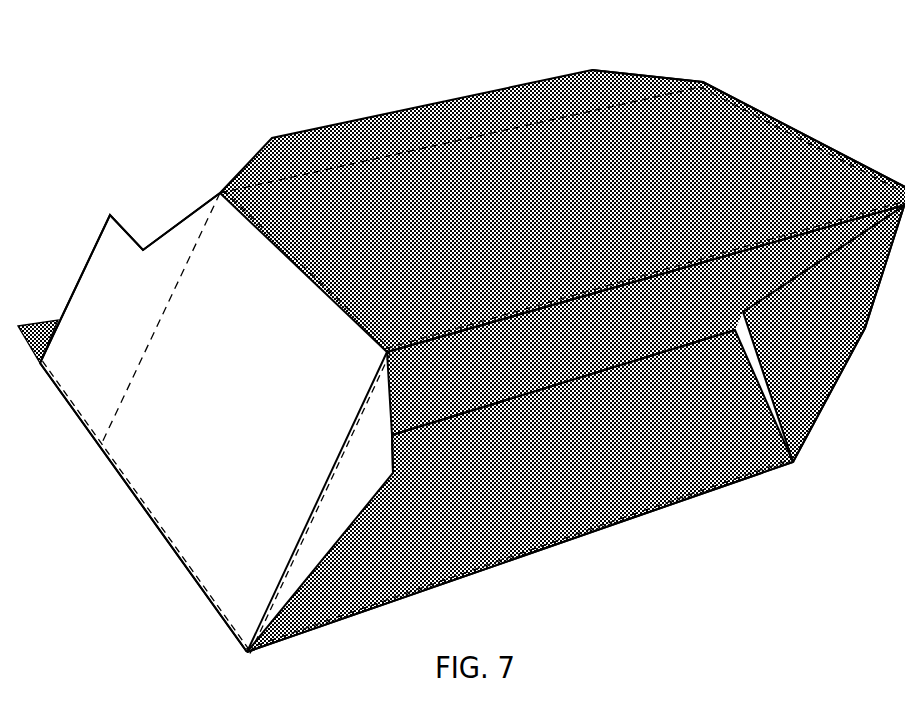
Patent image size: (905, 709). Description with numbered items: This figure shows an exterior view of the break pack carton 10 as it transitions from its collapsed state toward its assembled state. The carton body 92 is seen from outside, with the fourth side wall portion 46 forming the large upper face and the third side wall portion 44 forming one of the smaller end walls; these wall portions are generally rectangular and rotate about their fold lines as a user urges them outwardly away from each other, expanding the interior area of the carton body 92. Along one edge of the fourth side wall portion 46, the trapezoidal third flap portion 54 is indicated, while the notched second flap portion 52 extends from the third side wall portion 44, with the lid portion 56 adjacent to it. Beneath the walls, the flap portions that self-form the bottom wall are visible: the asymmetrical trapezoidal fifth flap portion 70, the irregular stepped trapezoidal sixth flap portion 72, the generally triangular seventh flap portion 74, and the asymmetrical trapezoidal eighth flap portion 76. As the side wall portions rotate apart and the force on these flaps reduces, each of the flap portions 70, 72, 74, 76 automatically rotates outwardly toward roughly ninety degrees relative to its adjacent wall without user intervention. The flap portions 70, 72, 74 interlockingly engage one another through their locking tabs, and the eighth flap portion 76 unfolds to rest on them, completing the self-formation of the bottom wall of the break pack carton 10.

The break pack carton 10 is at (818, 115).
The third side wall portion 44 is at (230, 437).
The fourth side wall portion 46 is at (590, 217).
The second flap portion 52 is at (130, 347).
The third flap portion 54 is at (365, 135).
The lid portion 56 is at (42, 333).
The fifth flap portion 70 is at (815, 351).
The sixth flap portion 72 is at (598, 461).
The seventh flap portion 74 is at (382, 471).
The eighth flap portion 76 is at (613, 339).
The carton body 92 is at (687, 132).